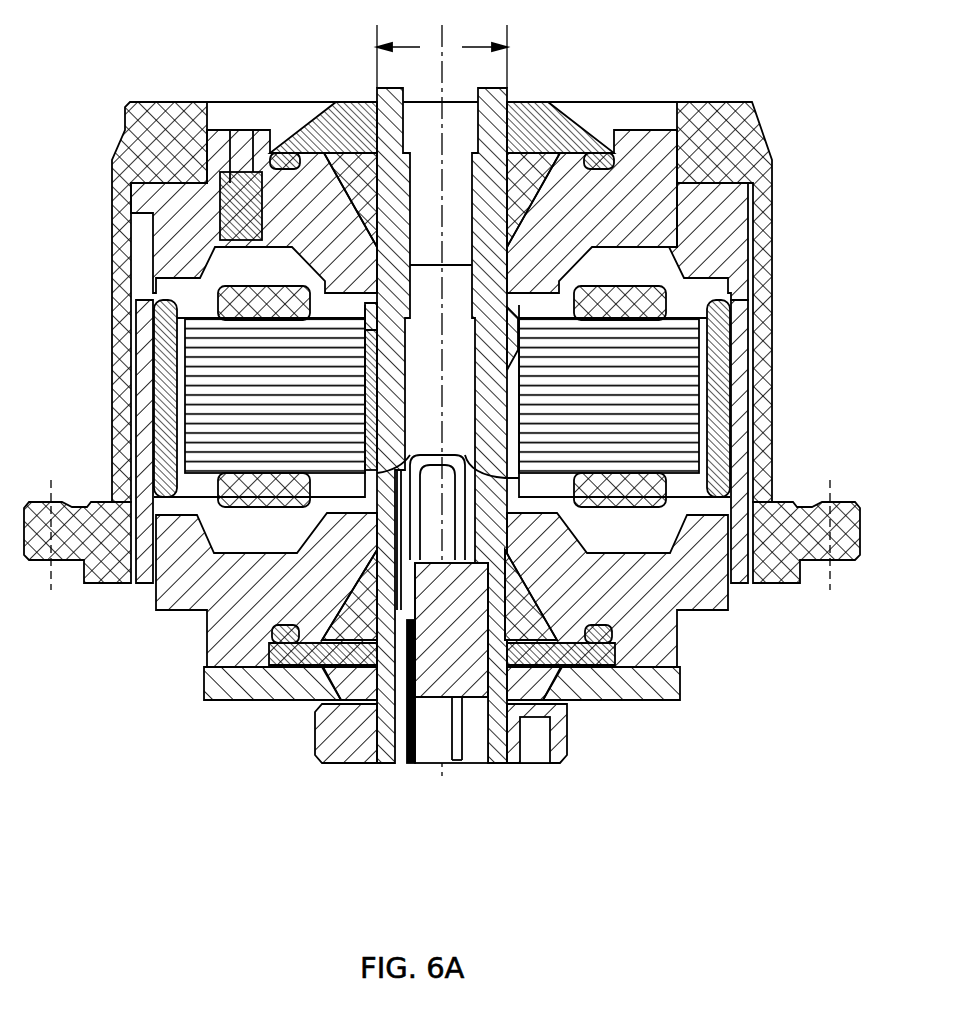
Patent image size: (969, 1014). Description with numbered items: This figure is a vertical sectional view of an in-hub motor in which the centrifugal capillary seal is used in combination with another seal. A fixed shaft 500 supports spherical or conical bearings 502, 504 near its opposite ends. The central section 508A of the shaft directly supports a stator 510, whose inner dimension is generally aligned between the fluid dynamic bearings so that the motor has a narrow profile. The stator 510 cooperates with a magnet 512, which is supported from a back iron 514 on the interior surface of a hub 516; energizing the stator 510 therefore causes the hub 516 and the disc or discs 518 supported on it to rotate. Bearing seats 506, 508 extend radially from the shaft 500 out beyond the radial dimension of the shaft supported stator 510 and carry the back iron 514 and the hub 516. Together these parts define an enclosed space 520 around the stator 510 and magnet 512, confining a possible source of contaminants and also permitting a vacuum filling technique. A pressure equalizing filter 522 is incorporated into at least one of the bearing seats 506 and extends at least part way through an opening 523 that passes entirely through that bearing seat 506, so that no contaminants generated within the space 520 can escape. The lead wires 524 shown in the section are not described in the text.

The fixed shaft 500 is at (492, 120).
The bearing 502 is at (333, 687).
The bearing 504 is at (368, 128).
The bearing seat 506 is at (650, 150).
The bearing seat 508 is at (670, 577).
The central section of the shaft 508A is at (703, 322).
The stator 510 is at (663, 418).
The magnet 512 is at (718, 362).
The back iron 514 is at (740, 255).
The hub 516 is at (773, 190).
The disc 518 is at (440, 513).
The enclosed space 520 is at (748, 212).
The pressure equalizing filter 522 is at (293, 128).
The opening 523 is at (240, 130).
The lead wires 524 is at (448, 595).